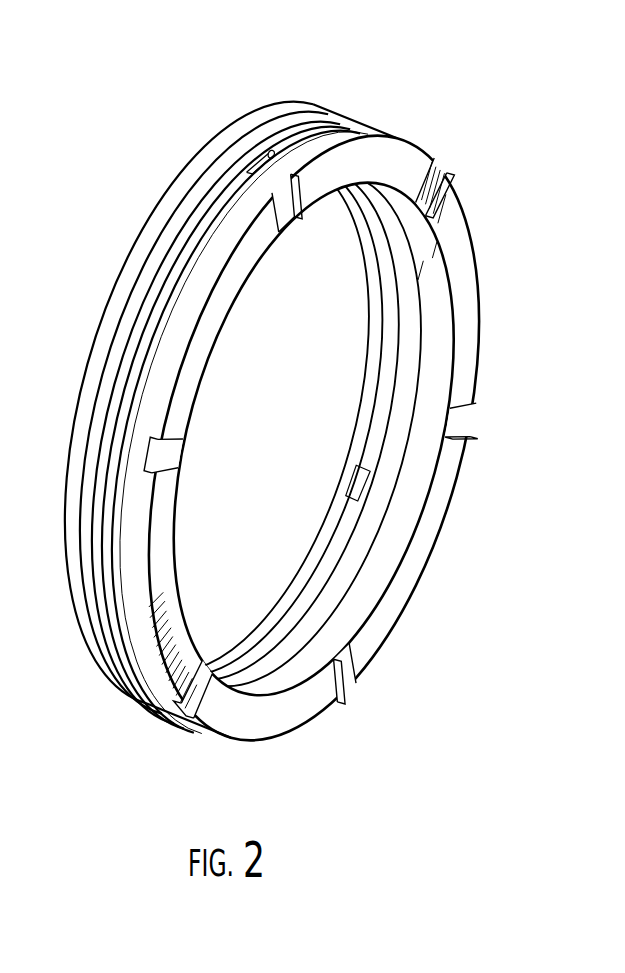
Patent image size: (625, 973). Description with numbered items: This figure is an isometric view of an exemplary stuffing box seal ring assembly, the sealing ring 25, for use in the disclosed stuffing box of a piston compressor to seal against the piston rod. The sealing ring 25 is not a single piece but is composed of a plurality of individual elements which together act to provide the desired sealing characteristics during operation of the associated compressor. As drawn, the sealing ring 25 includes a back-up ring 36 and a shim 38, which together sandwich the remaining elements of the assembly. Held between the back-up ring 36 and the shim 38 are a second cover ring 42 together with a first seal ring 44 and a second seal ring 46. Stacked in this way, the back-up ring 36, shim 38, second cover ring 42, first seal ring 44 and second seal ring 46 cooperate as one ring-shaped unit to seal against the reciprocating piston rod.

The sealing ring 25 is at (274, 394).
The back-up ring 36 is at (228, 138).
The shim 38 is at (450, 233).
The second cover ring 42 is at (262, 148).
The first seal ring 44 is at (255, 642).
The second seal ring 46 is at (310, 612).